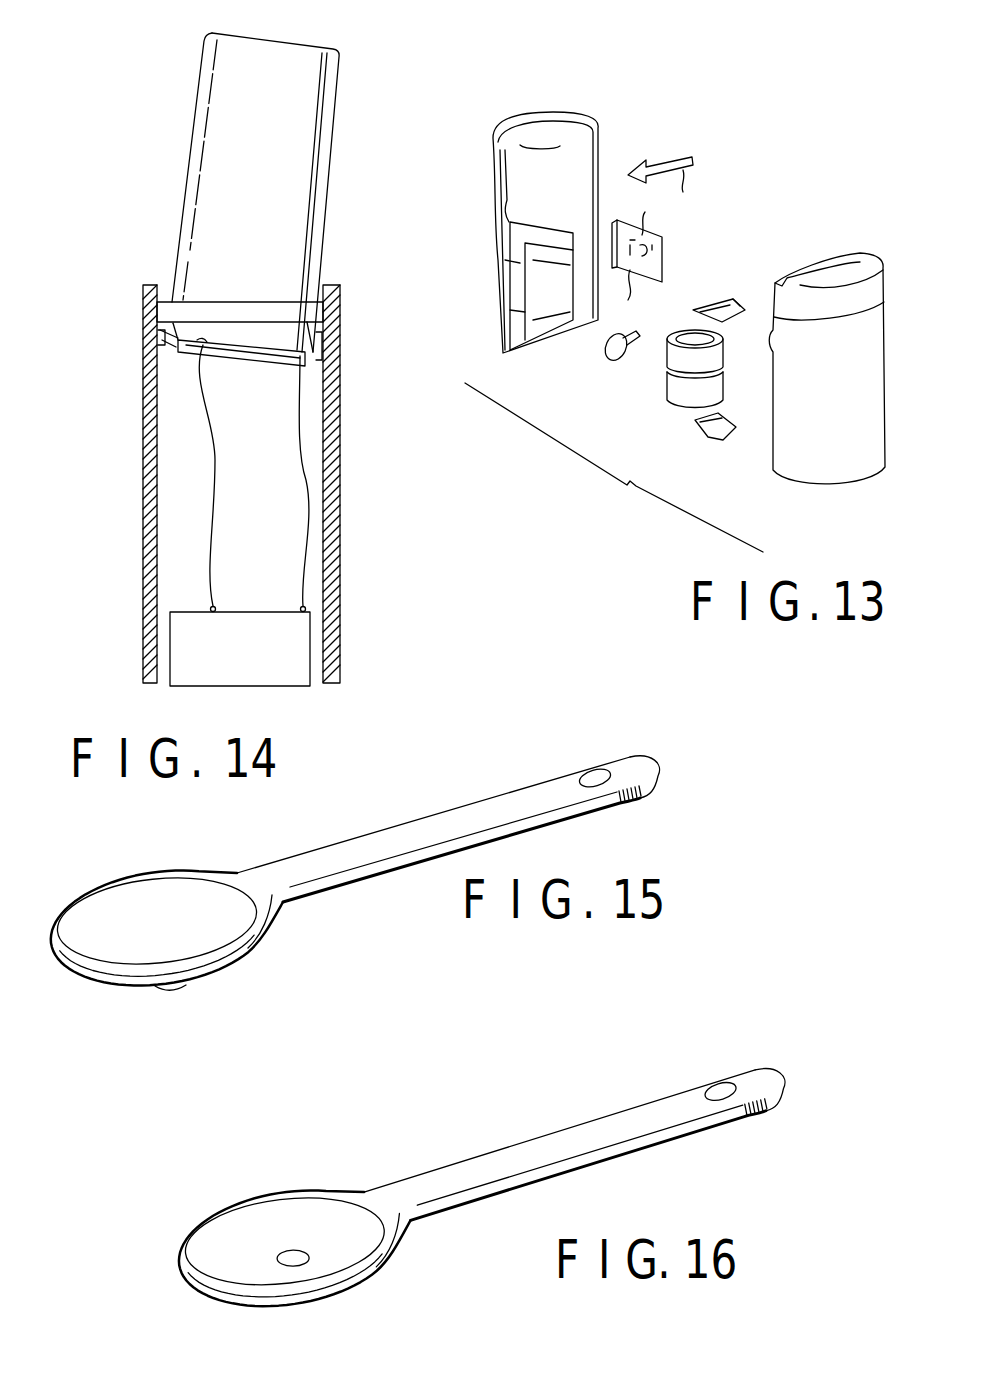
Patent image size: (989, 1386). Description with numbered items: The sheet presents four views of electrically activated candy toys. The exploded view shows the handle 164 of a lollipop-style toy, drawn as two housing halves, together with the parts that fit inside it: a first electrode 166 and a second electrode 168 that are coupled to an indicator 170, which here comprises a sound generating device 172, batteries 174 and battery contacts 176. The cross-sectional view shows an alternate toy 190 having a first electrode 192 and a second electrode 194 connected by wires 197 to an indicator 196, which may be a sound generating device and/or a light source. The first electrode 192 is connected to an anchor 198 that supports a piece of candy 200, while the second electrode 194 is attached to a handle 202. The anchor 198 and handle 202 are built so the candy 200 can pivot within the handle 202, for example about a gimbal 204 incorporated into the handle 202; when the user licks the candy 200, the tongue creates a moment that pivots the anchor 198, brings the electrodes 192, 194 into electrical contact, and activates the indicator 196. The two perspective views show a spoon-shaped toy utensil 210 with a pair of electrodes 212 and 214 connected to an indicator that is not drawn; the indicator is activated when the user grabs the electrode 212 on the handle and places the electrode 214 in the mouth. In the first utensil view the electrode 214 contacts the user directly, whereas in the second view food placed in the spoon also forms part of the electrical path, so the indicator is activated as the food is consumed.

In FIG. 13, the handle 164 is at (497, 218).
In FIG. 13, the first electrode 166 is at (607, 356).
In FIG. 13, the second electrode 168 is at (667, 160).
In FIG. 13, the indicator 170 is at (697, 268).
In FIG. 13, the sound generating device 172 is at (662, 242).
In FIG. 13, the batteries 174 is at (673, 396).
In FIG. 13, the battery contacts 176 is at (722, 307).
In FIG. 14, the toy 190 is at (111, 321).
In FIG. 14, the first electrode 192 is at (176, 352).
In FIG. 14, the second electrode 194 is at (322, 365).
In FIG. 14, the indicator 196 is at (233, 670).
In FIG. 14, the wires 197 is at (303, 512).
In FIG. 14, the anchor 198 is at (183, 362).
In FIG. 14, the candy 200 is at (312, 170).
In FIG. 14, the handle 202 is at (142, 587).
In FIG. 14, the gimbal 204 is at (305, 314).
In FIG. 15, the toy utensil 210 is at (413, 810).
In FIG. 16, the toy utensil 210 is at (482, 1169).
In FIG. 15, the electrode 212 is at (597, 772).
In FIG. 16, the electrode 212 is at (755, 1043).
In FIG. 15, the electrode 214 is at (178, 986).
In FIG. 16, the electrode 214 is at (266, 1203).